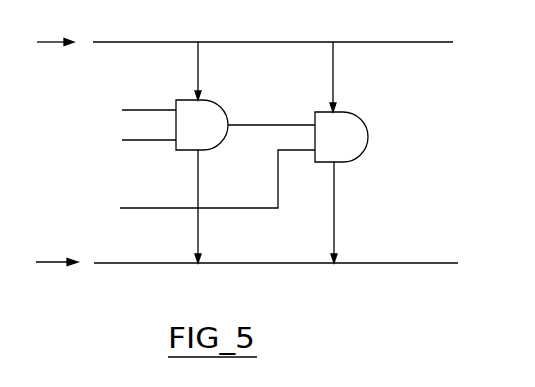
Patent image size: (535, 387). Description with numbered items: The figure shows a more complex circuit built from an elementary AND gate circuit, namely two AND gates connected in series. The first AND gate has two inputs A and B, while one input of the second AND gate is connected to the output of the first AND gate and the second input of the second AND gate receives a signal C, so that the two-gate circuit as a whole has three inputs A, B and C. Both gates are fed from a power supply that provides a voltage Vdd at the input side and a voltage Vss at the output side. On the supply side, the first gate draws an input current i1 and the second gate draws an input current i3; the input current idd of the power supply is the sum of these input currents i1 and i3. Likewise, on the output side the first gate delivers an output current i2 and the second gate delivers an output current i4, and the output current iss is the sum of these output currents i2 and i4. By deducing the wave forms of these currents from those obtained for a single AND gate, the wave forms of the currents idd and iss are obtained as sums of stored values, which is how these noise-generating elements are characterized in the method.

The supply voltage Vdd is at (273, 27).
The output voltage Vss is at (276, 281).
The power supply input current idd is at (54, 30).
The output current iss is at (56, 250).
The input current of first AND gate i1 is at (202, 96).
The output current of first AND gate i2 is at (208, 206).
The input current of second AND gate i3 is at (341, 102).
The output current of second AND gate i4 is at (344, 212).
The first input A is at (138, 113).
The second input B is at (137, 143).
The third input signal C is at (206, 186).